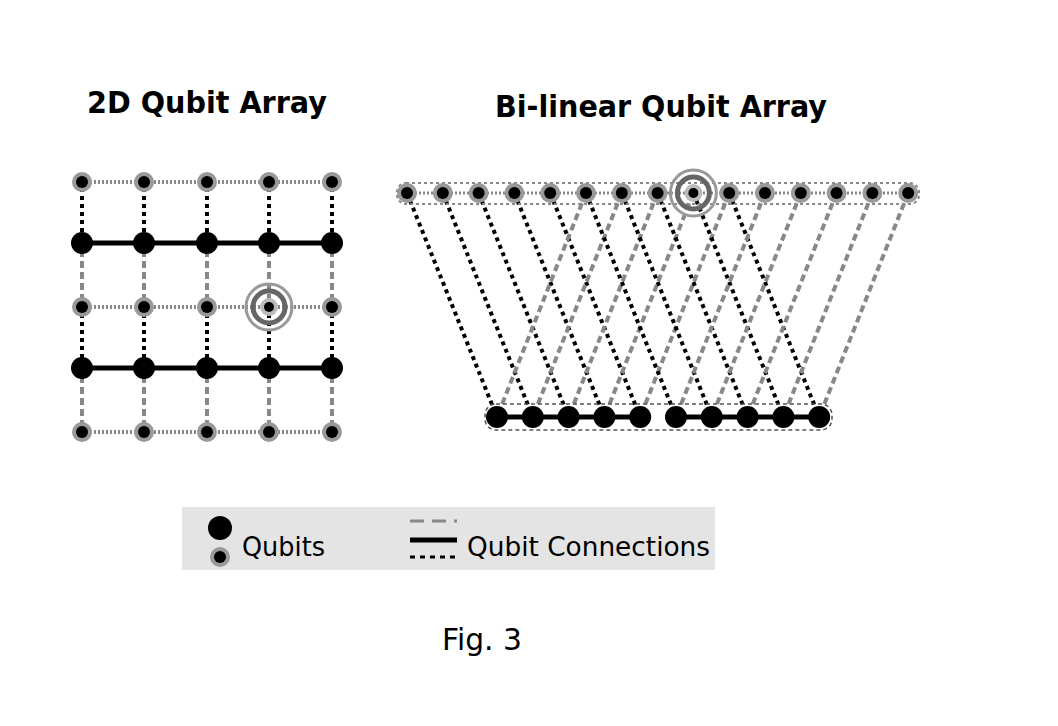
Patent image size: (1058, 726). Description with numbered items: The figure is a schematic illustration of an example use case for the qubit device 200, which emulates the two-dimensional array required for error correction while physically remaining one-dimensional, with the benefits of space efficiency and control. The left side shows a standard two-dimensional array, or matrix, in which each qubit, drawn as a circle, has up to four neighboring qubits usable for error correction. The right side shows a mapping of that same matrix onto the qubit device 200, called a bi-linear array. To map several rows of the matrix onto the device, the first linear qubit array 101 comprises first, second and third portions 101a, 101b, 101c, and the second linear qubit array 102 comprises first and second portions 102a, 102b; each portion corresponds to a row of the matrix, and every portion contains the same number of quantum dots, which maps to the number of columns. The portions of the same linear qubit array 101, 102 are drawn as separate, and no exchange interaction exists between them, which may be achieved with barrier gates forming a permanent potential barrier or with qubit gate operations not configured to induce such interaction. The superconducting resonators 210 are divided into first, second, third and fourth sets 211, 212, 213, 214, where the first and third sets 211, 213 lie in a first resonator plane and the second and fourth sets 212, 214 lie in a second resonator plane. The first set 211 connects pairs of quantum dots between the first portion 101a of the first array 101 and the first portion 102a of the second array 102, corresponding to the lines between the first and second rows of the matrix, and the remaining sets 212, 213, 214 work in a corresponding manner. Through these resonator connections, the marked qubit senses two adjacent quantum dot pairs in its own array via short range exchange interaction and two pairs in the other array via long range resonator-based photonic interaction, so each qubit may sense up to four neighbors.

The qubit device 200 is at (657, 54).
The first linear qubit array 101 is at (864, 151).
The second linear qubit array 102 is at (852, 428).
The first portion of the first linear qubit array 101a is at (91, 192).
The second portion of the first linear qubit array 101b is at (93, 320).
The third portion of the first linear qubit array 101c is at (98, 443).
The first portion of the second linear qubit array 102a is at (95, 258).
The second portion of the second linear qubit array 102b is at (97, 381).
The superconducting resonators 210 is at (483, 390).
The first set of superconducting resonators 211 is at (316, 212).
The second set of superconducting resonators 212 is at (314, 276).
The third set of superconducting resonators 213 is at (317, 332).
The fourth set of superconducting resonators 214 is at (316, 397).